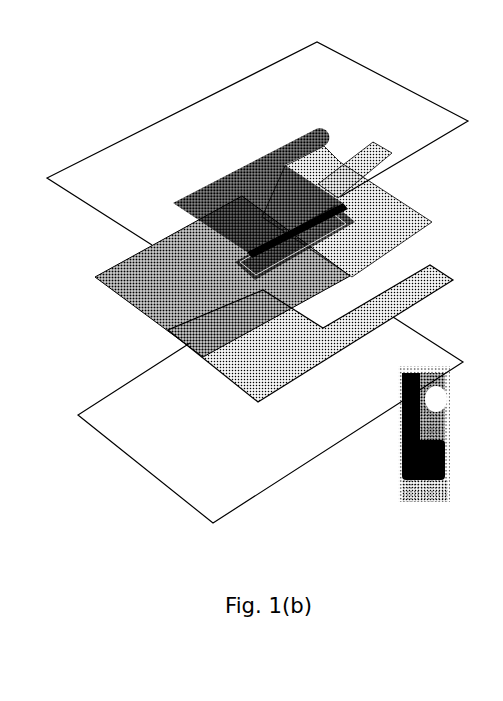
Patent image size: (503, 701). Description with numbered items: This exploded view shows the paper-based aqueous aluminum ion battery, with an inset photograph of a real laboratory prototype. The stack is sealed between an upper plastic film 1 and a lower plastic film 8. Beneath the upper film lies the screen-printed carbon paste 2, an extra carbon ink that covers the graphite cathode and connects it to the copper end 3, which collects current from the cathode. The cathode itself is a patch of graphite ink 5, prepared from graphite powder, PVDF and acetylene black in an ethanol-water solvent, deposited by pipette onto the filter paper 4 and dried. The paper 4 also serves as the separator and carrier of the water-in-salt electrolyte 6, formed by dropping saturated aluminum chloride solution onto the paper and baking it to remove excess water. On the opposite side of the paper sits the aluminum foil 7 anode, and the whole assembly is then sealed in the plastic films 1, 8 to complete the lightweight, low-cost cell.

The plastic film (top) 1 is at (257, 143).
The C paste 2 is at (260, 193).
The Cu end 3 is at (355, 170).
The paper 4 is at (347, 211).
The graphite ink 5 is at (295, 252).
The water-in-salt (AlCl3) electrolyte 6 is at (222, 276).
The Al foil 7 is at (310, 333).
The plastic film (bottom) 8 is at (270, 420).